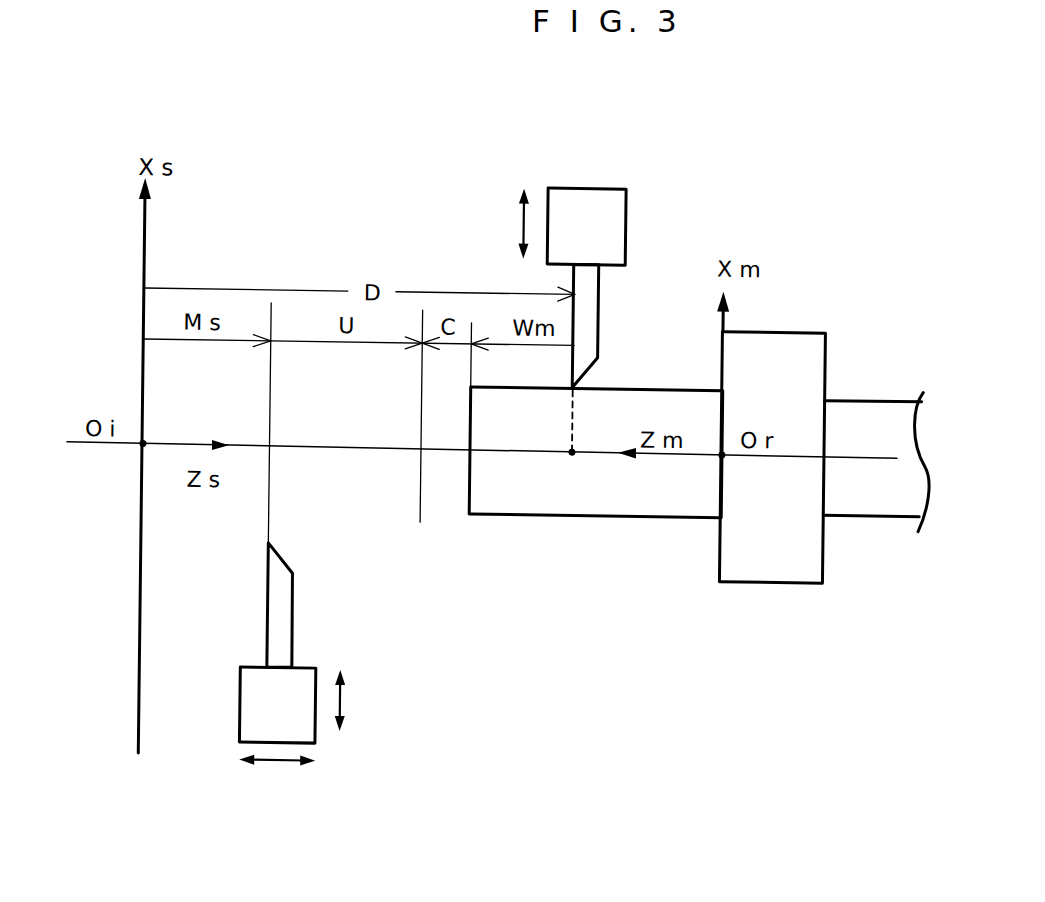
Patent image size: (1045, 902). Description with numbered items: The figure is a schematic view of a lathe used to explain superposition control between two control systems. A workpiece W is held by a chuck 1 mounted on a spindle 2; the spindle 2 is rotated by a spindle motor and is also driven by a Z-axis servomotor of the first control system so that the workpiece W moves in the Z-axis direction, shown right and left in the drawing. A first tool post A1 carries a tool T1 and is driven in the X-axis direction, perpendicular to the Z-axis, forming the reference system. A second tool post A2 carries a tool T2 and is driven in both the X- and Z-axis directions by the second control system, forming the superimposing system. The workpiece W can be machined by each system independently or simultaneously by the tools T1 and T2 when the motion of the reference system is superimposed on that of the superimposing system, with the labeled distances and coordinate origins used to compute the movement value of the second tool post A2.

The chuck 1 is at (769, 323).
The spindle 2 is at (862, 390).
The workpiece W is at (566, 509).
The tool T1 is at (596, 318).
The tool T2 is at (270, 595).
The first tool post A1 is at (623, 218).
The second tool post A2 is at (243, 718).